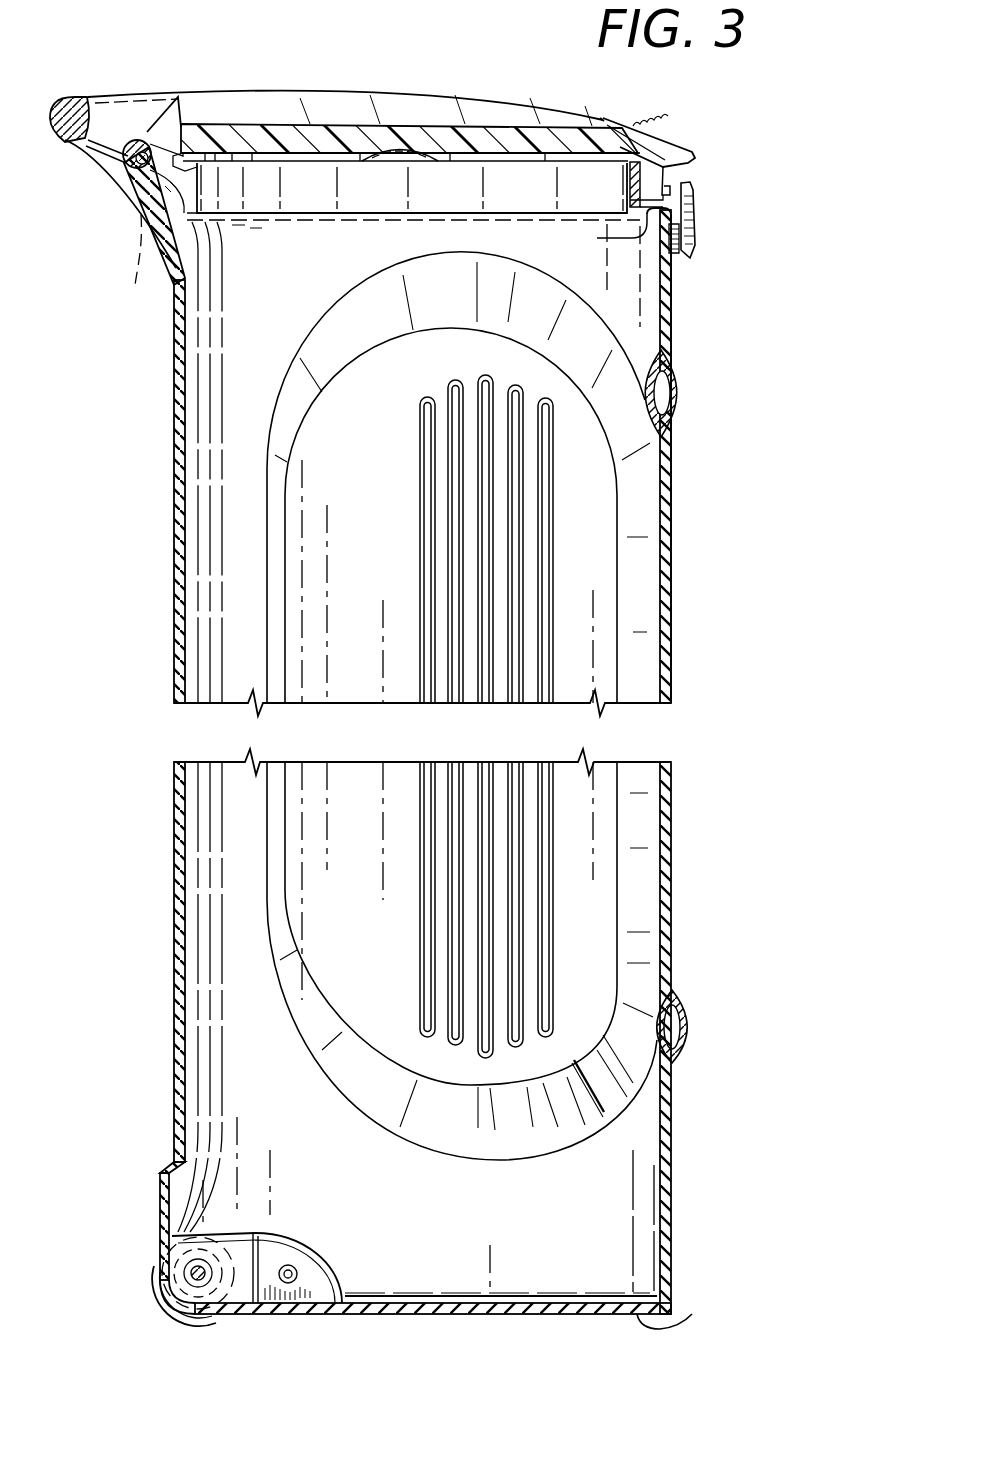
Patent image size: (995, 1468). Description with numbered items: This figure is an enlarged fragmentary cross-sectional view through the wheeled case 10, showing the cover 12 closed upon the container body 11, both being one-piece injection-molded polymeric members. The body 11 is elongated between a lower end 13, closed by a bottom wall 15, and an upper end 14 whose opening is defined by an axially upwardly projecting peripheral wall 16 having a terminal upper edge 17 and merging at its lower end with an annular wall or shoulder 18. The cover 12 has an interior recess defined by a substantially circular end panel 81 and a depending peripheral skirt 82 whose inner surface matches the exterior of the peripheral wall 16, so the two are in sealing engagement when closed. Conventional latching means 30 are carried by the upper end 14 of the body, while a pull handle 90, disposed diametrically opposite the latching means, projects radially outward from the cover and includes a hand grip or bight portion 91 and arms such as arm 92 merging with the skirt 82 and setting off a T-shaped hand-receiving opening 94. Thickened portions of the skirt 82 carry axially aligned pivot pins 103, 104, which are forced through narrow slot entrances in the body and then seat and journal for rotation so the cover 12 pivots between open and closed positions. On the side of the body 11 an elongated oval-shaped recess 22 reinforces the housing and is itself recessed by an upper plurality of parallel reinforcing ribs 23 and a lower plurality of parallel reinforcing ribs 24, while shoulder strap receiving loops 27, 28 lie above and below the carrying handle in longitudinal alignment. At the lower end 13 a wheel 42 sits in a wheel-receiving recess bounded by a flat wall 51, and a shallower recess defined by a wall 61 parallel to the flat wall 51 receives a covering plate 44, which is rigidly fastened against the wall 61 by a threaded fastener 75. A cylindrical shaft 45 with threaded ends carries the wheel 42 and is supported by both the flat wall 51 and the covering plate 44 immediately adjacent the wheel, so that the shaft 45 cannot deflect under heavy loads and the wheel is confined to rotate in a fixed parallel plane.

The wheeled case 10 is at (720, 142).
The container body 11 is at (682, 308).
The cover 12 is at (318, 75).
The lower end 13 is at (748, 1228).
The upper end 14 is at (172, 325).
The bottom wall 15 is at (668, 1316).
The peripheral wall 16 is at (308, 200).
The terminal upper edge 17 is at (410, 153).
The annular wall 18 is at (640, 242).
The oval-shaped recess 22 is at (340, 1063).
The upper reinforcing ribs 23 is at (452, 498).
The lower reinforcing ribs 24 is at (455, 923).
The shoulder strap receiving loop 27 is at (680, 393).
The shoulder strap receiving loop 28 is at (690, 1032).
The latching means 30 is at (700, 214).
The wheel 42 is at (165, 1268).
The covering plate 44 is at (262, 1243).
The shaft 45 is at (190, 1275).
The flat wall 51 is at (216, 1238).
The wall 61 is at (318, 1290).
The threaded fastener 75 is at (293, 1265).
The end panel 81 is at (265, 140).
The peripheral skirt 82 is at (690, 172).
The pull handle 90 is at (60, 147).
The hand grip 91 is at (80, 97).
The arm 92 is at (118, 101).
The T-shaped opening 94 is at (95, 160).
The pivot pin 103 is at (163, 286).
The pivot pin 104 is at (156, 293).